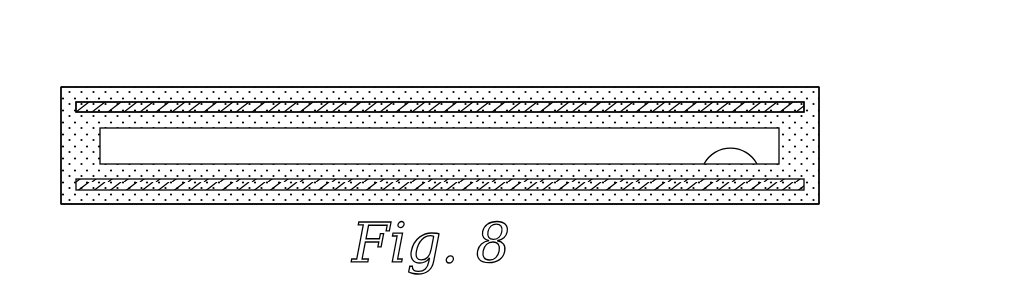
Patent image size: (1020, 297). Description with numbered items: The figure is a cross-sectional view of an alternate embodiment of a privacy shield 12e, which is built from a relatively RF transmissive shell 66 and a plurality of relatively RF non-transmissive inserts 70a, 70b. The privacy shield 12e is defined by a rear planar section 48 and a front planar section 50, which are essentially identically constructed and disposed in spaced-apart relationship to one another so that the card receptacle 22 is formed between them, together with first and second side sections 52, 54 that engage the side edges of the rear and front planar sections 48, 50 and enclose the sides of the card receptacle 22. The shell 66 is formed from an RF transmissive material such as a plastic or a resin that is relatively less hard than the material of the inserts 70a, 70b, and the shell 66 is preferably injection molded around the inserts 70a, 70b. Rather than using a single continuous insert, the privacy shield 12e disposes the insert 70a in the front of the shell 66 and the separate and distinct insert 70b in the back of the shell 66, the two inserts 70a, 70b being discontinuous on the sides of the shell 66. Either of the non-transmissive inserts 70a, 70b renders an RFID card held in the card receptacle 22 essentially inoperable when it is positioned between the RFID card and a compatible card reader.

The privacy shield 12e is at (753, 77).
The rear planar section 48 is at (592, 87).
The front planar section 50 is at (567, 205).
The first side section 52 is at (61, 118).
The second side section 54 is at (820, 145).
The RF non-transmissive insert 70a is at (105, 100).
The RF non-transmissive insert 70b is at (218, 182).
The RF transmissive shell 66 is at (250, 107).
The card receptacle 22 is at (756, 166).